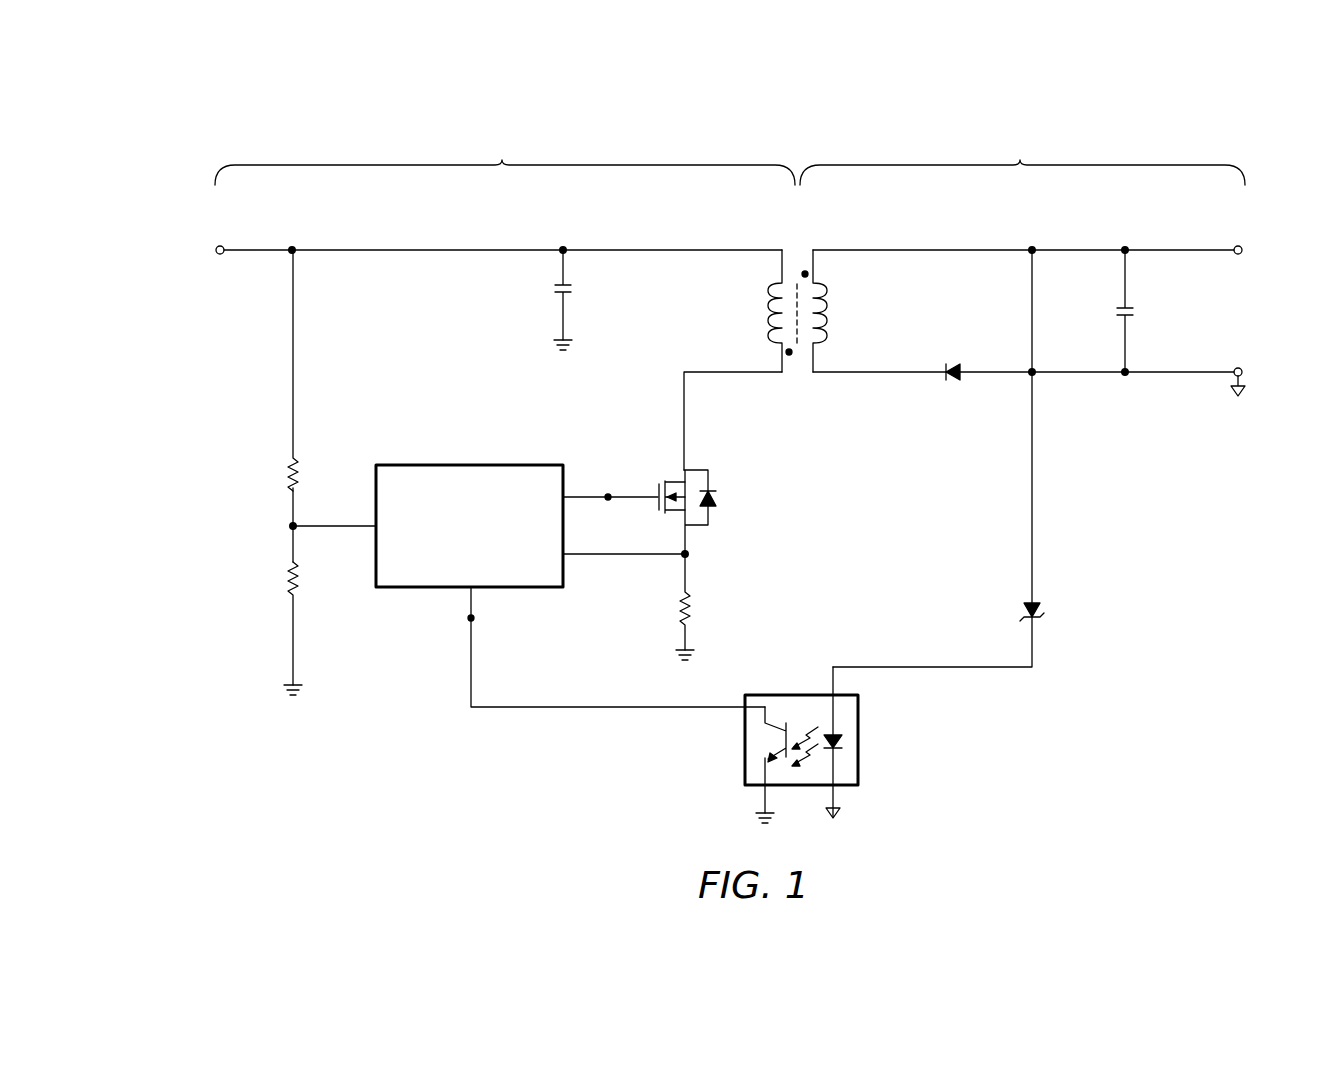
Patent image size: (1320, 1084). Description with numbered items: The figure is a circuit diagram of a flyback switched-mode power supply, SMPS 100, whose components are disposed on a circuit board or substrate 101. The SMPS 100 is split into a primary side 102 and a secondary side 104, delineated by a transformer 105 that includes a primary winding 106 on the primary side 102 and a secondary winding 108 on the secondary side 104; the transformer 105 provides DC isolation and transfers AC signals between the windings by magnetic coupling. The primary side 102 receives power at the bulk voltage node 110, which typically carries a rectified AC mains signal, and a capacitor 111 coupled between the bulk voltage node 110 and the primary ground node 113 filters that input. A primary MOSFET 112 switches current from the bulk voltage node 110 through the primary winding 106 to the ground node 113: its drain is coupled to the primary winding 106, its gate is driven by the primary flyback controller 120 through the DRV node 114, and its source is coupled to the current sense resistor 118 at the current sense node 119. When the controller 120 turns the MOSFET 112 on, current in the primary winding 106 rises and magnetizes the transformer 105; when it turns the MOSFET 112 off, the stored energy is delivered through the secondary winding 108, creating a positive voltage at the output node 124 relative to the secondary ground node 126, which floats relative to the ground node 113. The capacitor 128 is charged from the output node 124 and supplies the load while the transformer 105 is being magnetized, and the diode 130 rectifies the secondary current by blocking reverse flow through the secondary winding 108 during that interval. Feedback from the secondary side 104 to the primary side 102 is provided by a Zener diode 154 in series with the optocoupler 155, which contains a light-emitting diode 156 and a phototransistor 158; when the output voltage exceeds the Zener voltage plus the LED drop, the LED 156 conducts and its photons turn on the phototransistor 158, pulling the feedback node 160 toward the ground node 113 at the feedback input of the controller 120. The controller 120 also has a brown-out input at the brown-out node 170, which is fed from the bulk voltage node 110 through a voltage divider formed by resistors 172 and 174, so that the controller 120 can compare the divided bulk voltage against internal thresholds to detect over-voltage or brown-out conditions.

The flyback SMPS 100 is at (183, 190).
The substrate 101 is at (130, 254).
The primary side 102 is at (505, 160).
The secondary side 104 is at (1022, 160).
The transformer 105 is at (800, 244).
The primary winding 106 is at (778, 308).
The secondary winding 108 is at (818, 308).
The bulk voltage node 110 is at (220, 256).
The capacitor 111 is at (556, 290).
The primary MOSFET 112 is at (700, 470).
The ground node 113 is at (570, 345).
The DRV node 114 is at (608, 494).
The current sense resistor 118 is at (690, 607).
The current sense node 119 is at (690, 553).
The primary flyback controller 120 is at (470, 465).
The voltage output node 124 is at (1243, 257).
The ground node 126 is at (840, 820).
The capacitor 128 is at (1135, 310).
The diode 130 is at (950, 386).
The Zener diode 154 is at (1042, 610).
The optocoupler 155 is at (800, 693).
The light-emitting diode 156 is at (845, 734).
The phototransistor 158 is at (770, 732).
The feedback node 160 is at (467, 620).
The brown-out node 170 is at (290, 528).
The resistor 172 is at (288, 470).
The resistor 174 is at (288, 580).